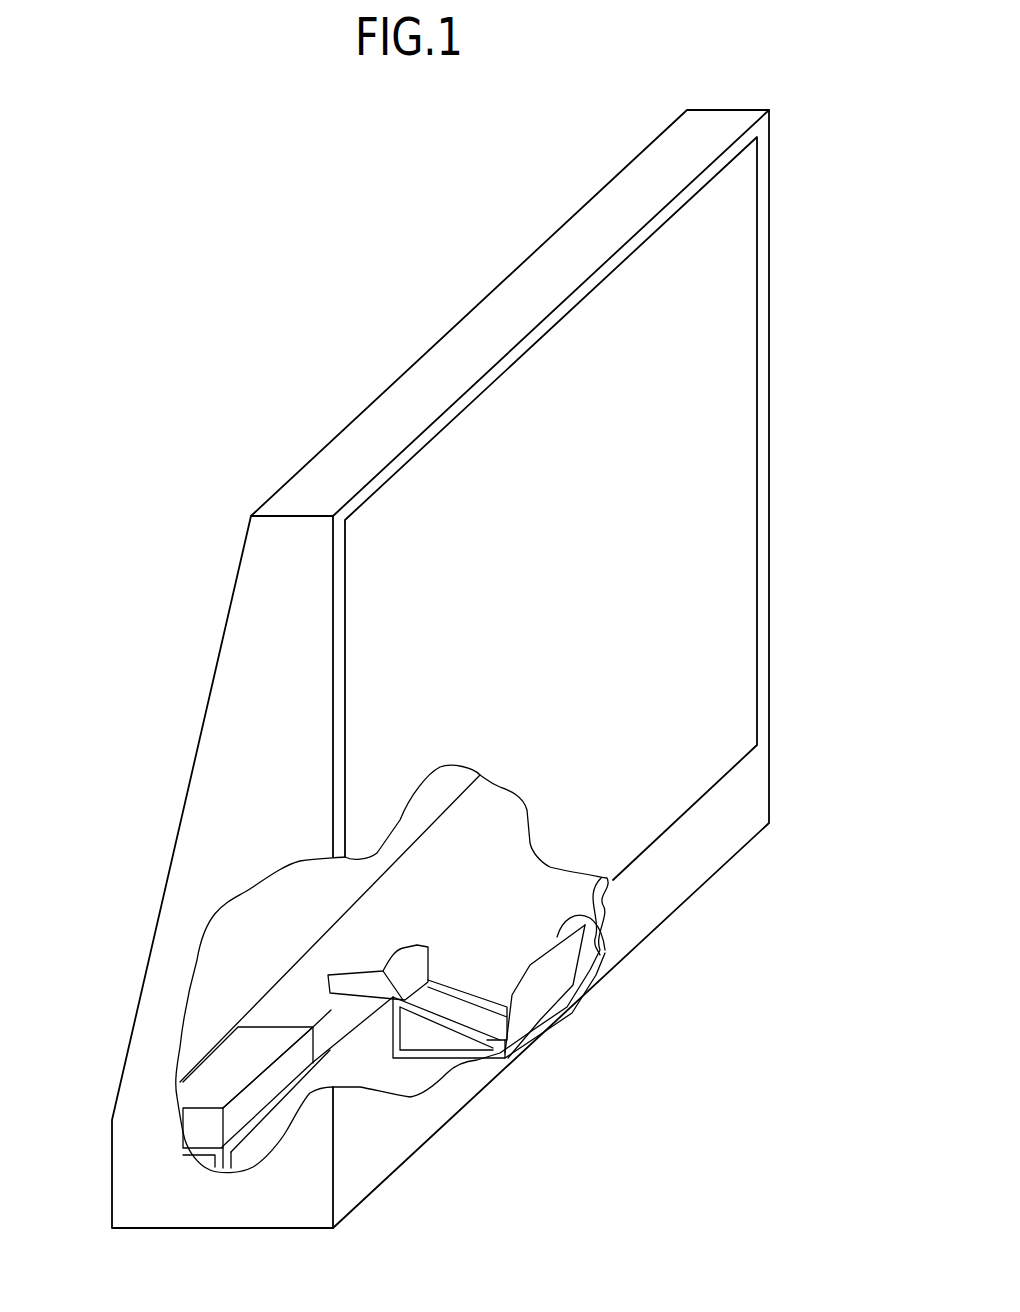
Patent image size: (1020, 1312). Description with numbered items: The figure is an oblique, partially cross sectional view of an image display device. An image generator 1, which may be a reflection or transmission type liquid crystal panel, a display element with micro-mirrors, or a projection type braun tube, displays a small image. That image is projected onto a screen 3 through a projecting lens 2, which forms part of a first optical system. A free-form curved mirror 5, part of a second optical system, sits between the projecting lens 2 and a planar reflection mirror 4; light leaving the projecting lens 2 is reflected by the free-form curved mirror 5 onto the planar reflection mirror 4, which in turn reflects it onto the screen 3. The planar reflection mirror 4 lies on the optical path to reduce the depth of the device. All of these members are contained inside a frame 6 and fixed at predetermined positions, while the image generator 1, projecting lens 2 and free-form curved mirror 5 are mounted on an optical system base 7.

The image generator 1 is at (203, 1127).
The projecting lens 2 is at (295, 1010).
The screen 3 is at (497, 435).
The planar reflection mirror 4 is at (300, 895).
The free-form curved mirror 5 is at (600, 927).
The frame 6 is at (258, 645).
The optical system base 7 is at (345, 1022).